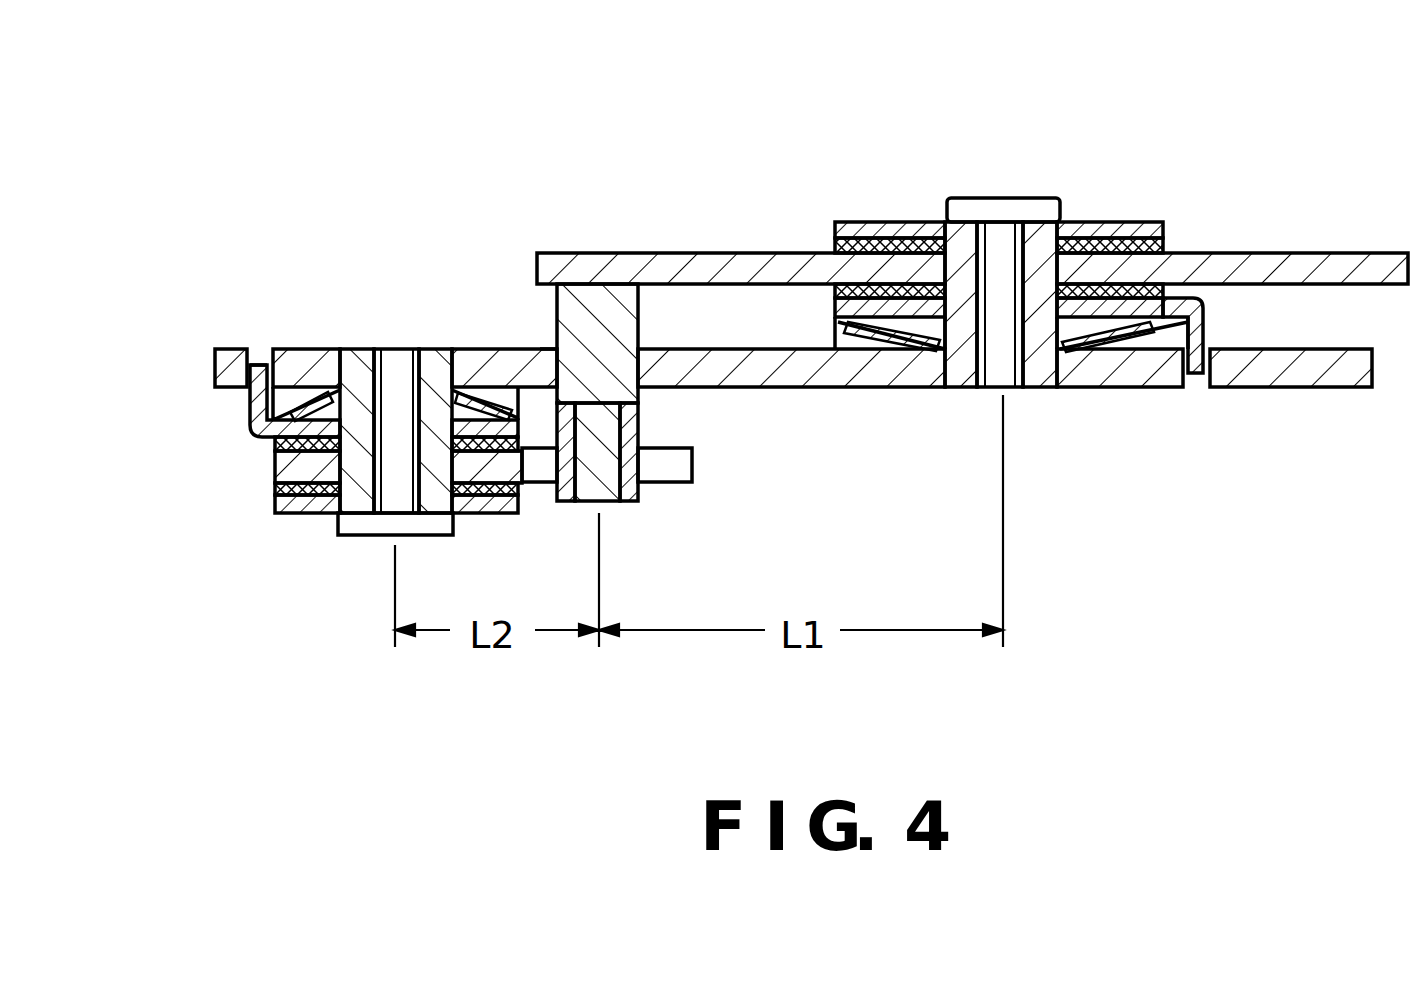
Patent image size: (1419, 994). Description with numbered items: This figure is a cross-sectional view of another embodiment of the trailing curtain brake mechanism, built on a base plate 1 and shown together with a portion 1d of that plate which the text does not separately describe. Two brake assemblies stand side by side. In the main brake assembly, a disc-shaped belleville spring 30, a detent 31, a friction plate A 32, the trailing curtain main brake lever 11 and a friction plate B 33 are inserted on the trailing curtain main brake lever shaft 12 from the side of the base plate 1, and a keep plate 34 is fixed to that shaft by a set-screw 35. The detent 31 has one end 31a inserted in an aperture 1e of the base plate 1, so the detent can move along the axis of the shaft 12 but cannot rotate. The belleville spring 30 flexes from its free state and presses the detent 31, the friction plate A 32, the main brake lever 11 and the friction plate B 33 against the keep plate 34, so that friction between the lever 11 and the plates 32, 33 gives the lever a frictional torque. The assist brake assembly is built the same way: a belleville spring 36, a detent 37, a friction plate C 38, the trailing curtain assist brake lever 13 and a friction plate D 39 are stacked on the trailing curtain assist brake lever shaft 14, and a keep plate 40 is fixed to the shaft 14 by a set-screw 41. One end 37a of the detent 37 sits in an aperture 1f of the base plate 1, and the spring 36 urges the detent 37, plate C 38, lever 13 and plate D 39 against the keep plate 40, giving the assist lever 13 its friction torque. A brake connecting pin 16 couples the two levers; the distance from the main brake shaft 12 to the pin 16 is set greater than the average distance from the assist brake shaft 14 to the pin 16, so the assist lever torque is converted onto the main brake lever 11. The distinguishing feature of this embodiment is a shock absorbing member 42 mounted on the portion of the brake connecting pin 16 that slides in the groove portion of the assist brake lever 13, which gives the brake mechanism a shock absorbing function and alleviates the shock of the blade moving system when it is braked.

The base plate 1 is at (1320, 388).
The plate edge portion 1d is at (548, 348).
The aperture 1e is at (1193, 388).
The aperture 1f is at (246, 352).
The trailing curtain main brake lever 11 is at (1350, 253).
The trailing curtain main brake lever shaft 12 is at (962, 330).
The trailing curtain assist brake lever 13 is at (275, 458).
The trailing curtain assist brake lever shaft 14 is at (380, 350).
The brake connecting pin 16 is at (597, 305).
The belleville spring 30 is at (873, 345).
The detent 31 is at (1180, 290).
The end of detent 31a is at (1205, 305).
The friction plate A 32 is at (840, 292).
The friction plate B 33 is at (840, 245).
The keep plate 34 is at (885, 222).
The set-screw 35 is at (1003, 205).
The belleville spring 36 is at (297, 352).
The detent 37 is at (247, 422).
The end of detent 37a is at (259, 363).
The friction plate C 38 is at (275, 443).
The friction plate D 39 is at (275, 492).
The keep plate 40 is at (285, 515).
The set-screw 41 is at (365, 525).
The shock absorbing member 42 is at (622, 505).